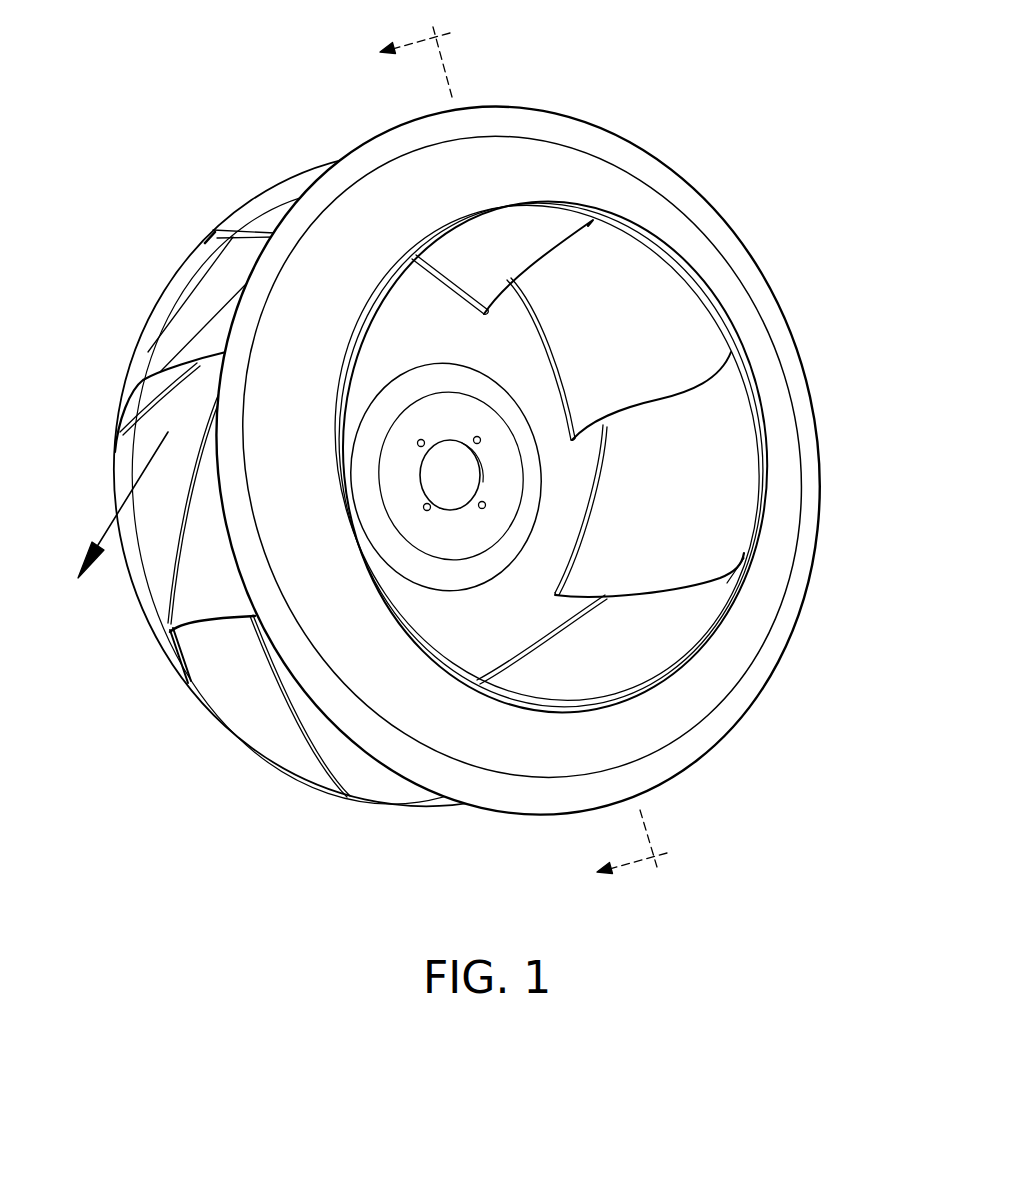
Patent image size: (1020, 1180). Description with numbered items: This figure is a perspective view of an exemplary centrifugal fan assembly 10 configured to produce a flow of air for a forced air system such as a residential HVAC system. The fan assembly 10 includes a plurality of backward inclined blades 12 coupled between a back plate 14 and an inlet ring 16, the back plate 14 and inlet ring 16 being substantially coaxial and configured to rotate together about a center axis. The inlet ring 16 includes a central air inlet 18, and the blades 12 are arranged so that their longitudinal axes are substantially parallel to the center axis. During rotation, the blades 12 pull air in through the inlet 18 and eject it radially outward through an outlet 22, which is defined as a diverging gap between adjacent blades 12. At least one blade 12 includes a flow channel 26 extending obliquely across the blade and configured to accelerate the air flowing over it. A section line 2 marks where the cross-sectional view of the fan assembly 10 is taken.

The centrifugal fan assembly 10 is at (465, 452).
The blades 12 is at (663, 322).
The back plate 14 is at (203, 296).
The inlet ring 16 is at (373, 227).
The central air inlet 18 is at (700, 465).
The outlet 22 is at (103, 533).
The flow channel 26 is at (183, 643).
The line 2- 2 is at (527, 446).